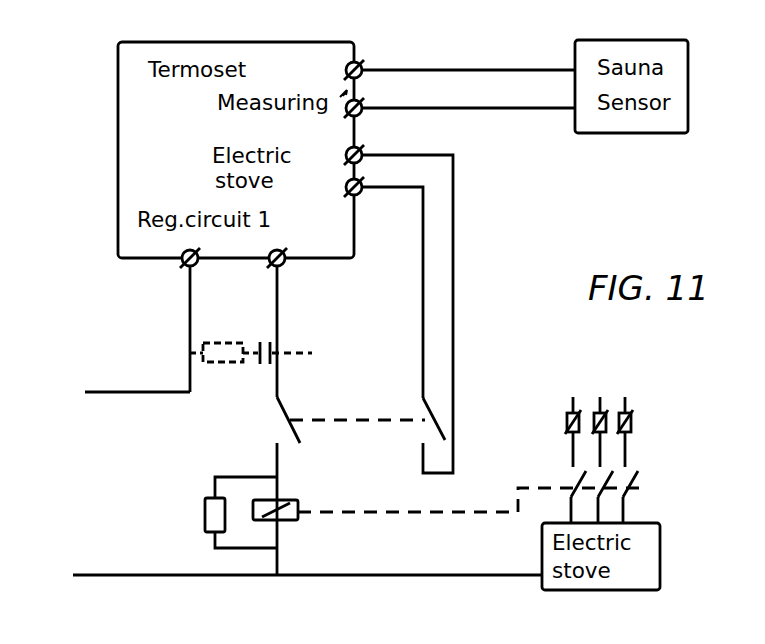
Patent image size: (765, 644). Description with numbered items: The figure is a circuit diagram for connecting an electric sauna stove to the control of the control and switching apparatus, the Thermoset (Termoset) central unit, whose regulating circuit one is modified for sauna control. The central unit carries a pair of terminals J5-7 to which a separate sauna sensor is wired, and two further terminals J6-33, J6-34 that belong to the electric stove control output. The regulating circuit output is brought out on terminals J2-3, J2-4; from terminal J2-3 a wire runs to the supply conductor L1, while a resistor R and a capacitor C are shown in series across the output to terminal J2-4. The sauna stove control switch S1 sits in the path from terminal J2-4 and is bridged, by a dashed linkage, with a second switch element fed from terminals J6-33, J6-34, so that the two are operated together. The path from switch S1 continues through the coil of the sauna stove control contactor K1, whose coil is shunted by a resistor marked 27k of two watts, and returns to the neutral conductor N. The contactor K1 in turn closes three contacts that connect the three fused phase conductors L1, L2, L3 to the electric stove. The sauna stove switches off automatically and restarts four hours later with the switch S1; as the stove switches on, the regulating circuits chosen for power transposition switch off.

The sauna sensor terminals J5-7 is at (378, 78).
The electric stove control terminal J6-33 is at (398, 299).
The electric stove control terminal J6-34 is at (385, 281).
The regulating circuit terminal J2-3 is at (210, 320).
The regulating circuit terminal J2-4 is at (298, 411).
The snubber resistor R is at (224, 367).
The snubber capacitor C is at (282, 367).
The sauna stove control switch S1 is at (361, 415).
The sauna stove control contactor K1 is at (448, 497).
The 27k 2W resistor 27k is at (213, 512).
The phase line L1 is at (317, 417).
The phase line L2 is at (598, 417).
The phase line L3 is at (625, 417).
The neutral line N is at (307, 556).